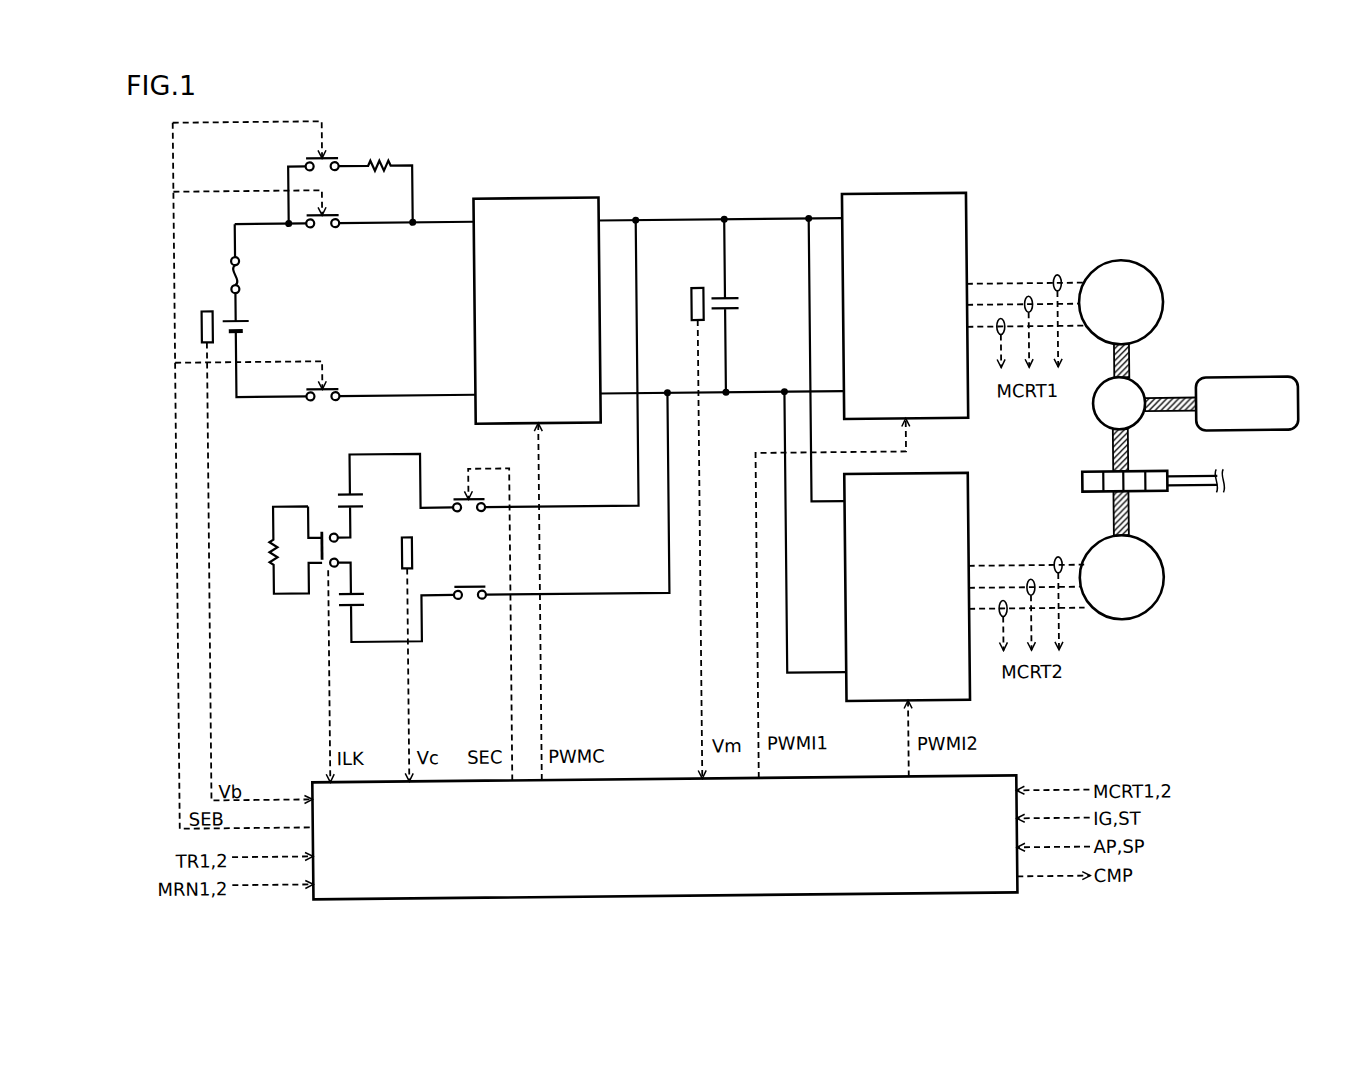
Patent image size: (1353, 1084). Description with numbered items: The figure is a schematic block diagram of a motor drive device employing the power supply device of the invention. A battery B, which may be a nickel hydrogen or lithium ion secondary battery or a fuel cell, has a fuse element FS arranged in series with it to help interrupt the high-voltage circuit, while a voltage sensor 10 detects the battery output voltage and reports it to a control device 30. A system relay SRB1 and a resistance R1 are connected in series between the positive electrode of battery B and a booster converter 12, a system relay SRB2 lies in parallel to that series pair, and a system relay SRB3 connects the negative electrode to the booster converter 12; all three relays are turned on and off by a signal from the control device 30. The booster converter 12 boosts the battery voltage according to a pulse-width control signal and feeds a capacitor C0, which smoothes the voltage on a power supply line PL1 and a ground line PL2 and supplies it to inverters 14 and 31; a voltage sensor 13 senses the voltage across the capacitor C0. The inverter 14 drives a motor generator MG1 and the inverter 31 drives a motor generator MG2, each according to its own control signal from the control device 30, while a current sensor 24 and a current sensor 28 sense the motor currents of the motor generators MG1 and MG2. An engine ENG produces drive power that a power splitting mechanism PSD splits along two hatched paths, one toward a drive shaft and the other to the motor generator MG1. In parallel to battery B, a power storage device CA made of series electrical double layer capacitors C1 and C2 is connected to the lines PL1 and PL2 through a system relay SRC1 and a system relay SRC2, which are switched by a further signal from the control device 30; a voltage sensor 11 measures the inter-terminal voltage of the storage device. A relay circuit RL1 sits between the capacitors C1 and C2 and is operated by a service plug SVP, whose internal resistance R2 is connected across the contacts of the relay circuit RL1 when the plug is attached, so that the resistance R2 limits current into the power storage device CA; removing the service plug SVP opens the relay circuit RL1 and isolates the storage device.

The voltage sensor 10 is at (209, 307).
The voltage sensor 11 is at (402, 550).
The booster converter 12 is at (568, 197).
The voltage sensor 13 is at (700, 288).
The inverter 14 is at (936, 196).
The current sensor 24 is at (1060, 279).
The current sensor 28 is at (1058, 561).
The control device 30 is at (993, 780).
The inverter 31 is at (936, 475).
The battery B is at (246, 317).
The fuse element FS is at (243, 273).
The system relay SRB1 is at (322, 154).
The system relay SRB2 is at (340, 216).
The system relay SRB3 is at (338, 387).
The resistance R1 is at (394, 160).
The capacitor C0 is at (742, 298).
The power supply line PL1 is at (683, 218).
The ground line PL2 is at (714, 396).
The motor generator MG1 is at (1153, 280).
The motor generator MG2 is at (1152, 558).
The power splitting mechanism PSD is at (1137, 431).
The engine ENG is at (1247, 383).
The service plug SVP is at (288, 498).
The power storage device CA is at (340, 485).
The relay circuit RL1 is at (320, 572).
The resistance R2 is at (273, 554).
The capacitor C1 is at (362, 490).
The capacitor C2 is at (358, 602).
The system relay SRC1 is at (470, 513).
The system relay SRC2 is at (470, 598).